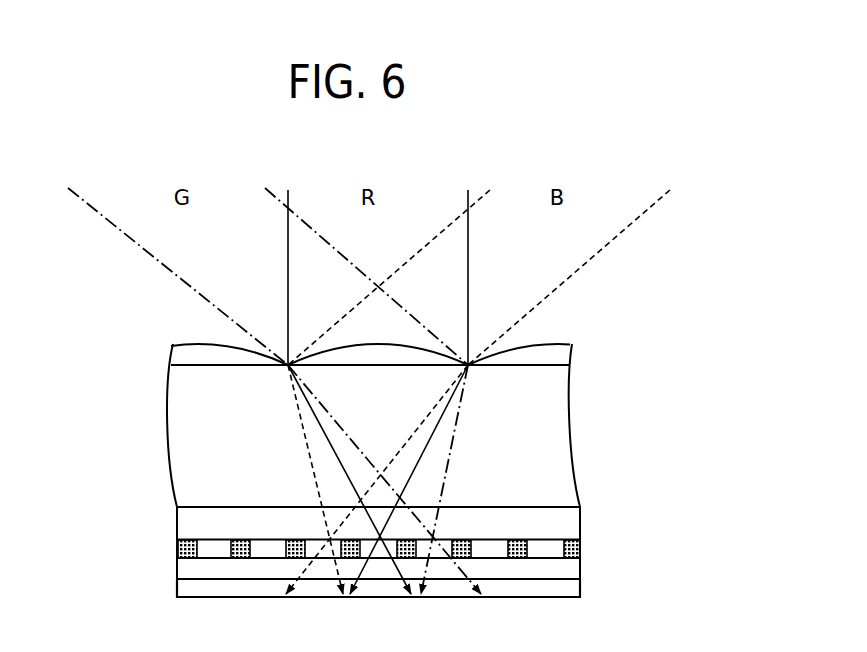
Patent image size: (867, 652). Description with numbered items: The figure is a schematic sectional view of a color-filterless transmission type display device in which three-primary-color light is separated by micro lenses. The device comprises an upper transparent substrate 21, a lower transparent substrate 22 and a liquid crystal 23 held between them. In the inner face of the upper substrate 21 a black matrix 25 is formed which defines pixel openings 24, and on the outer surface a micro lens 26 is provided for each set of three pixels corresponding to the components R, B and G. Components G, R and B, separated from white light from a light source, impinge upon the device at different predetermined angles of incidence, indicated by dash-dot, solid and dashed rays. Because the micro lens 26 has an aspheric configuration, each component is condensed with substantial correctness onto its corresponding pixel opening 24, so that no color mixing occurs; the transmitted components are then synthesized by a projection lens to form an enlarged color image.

The upper transparent substrate 21 is at (145, 344).
The lower transparent substrate 22 is at (177, 586).
The liquid crystal 23 is at (567, 572).
The pixel openings 24 is at (543, 548).
The black matrix 25 is at (577, 547).
The micro lens 26 is at (563, 353).